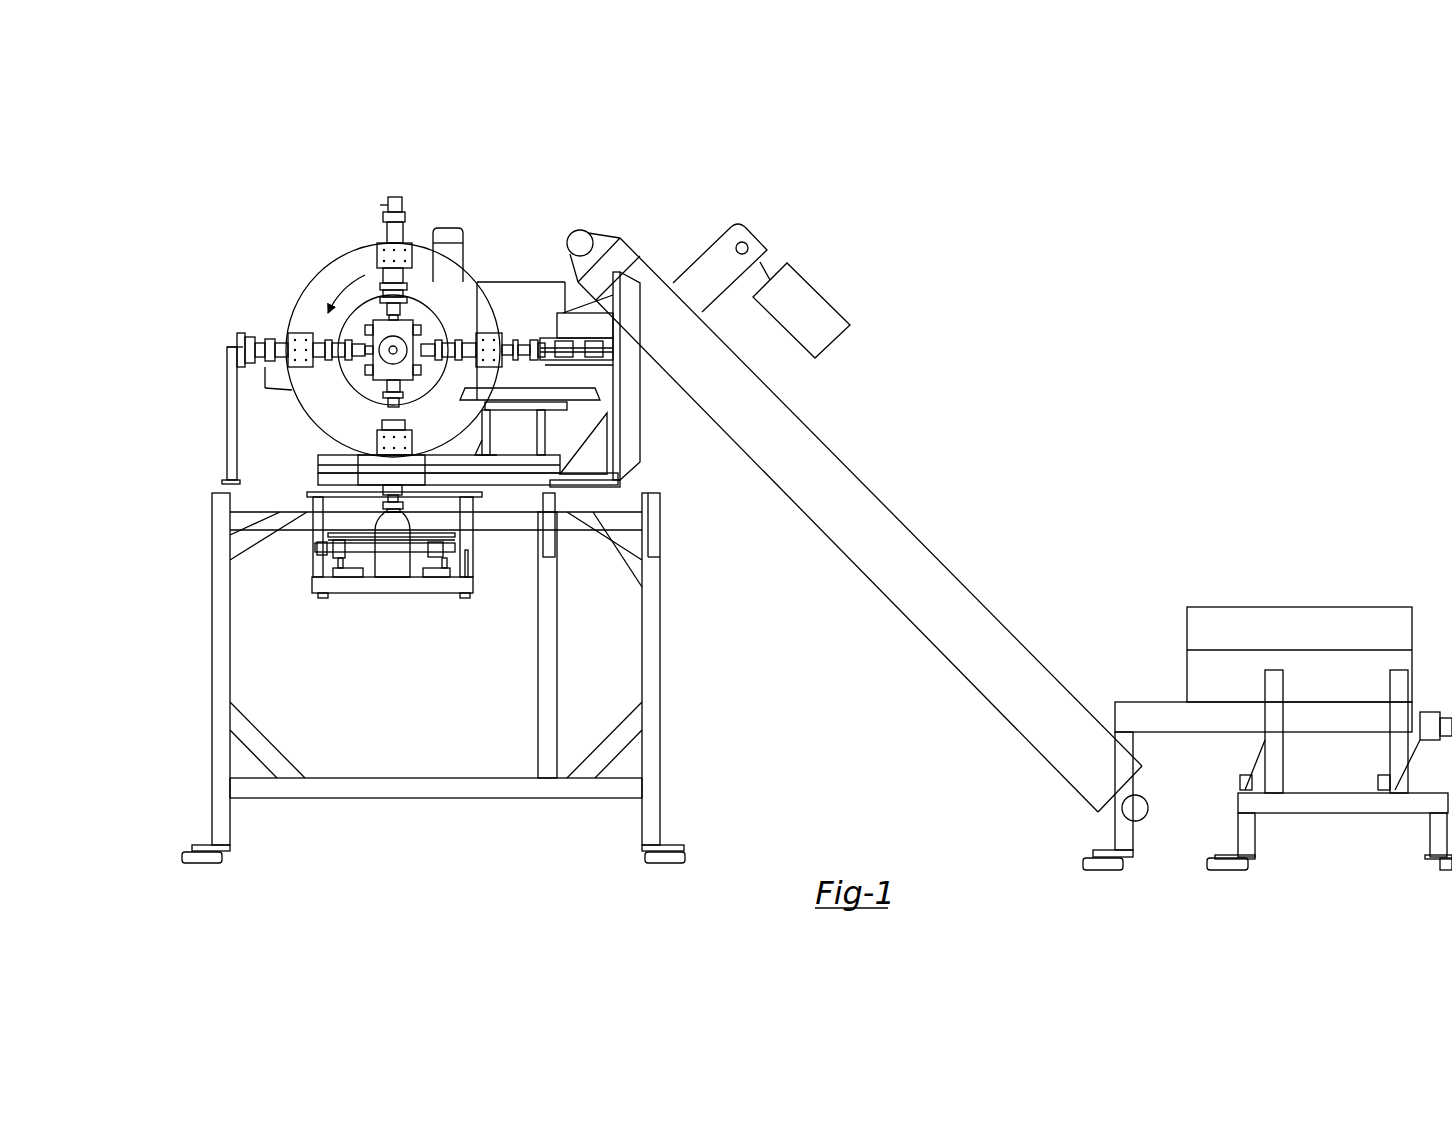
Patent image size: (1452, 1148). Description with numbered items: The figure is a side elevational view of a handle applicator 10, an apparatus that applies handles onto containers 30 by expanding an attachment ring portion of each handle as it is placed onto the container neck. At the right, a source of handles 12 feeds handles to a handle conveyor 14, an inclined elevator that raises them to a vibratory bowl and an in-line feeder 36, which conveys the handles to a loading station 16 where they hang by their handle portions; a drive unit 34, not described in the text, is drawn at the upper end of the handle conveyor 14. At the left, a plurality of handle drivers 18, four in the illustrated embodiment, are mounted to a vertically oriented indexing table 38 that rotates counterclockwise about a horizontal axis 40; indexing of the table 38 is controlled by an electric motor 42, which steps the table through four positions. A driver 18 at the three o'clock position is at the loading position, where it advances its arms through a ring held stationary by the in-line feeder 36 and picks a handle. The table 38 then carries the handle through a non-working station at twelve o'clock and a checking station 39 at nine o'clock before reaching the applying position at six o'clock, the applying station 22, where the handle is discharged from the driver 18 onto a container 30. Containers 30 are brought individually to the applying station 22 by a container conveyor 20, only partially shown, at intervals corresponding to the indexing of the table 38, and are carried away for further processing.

The handle applicator 10 is at (990, 345).
The source of handles 12 is at (1295, 618).
The handle conveyor 14 is at (948, 578).
The loading station 16 is at (545, 282).
The handle drivers 18 is at (380, 253).
The container conveyor 20 is at (317, 580).
The applying station 22 is at (342, 486).
The container 30 is at (397, 555).
The motor 34 is at (792, 292).
The in-line feeder 36 is at (600, 332).
The indexing table 38 is at (322, 390).
The checking station 39 is at (243, 330).
The horizontal axis 40 is at (395, 348).
The electric motor 42 is at (445, 238).